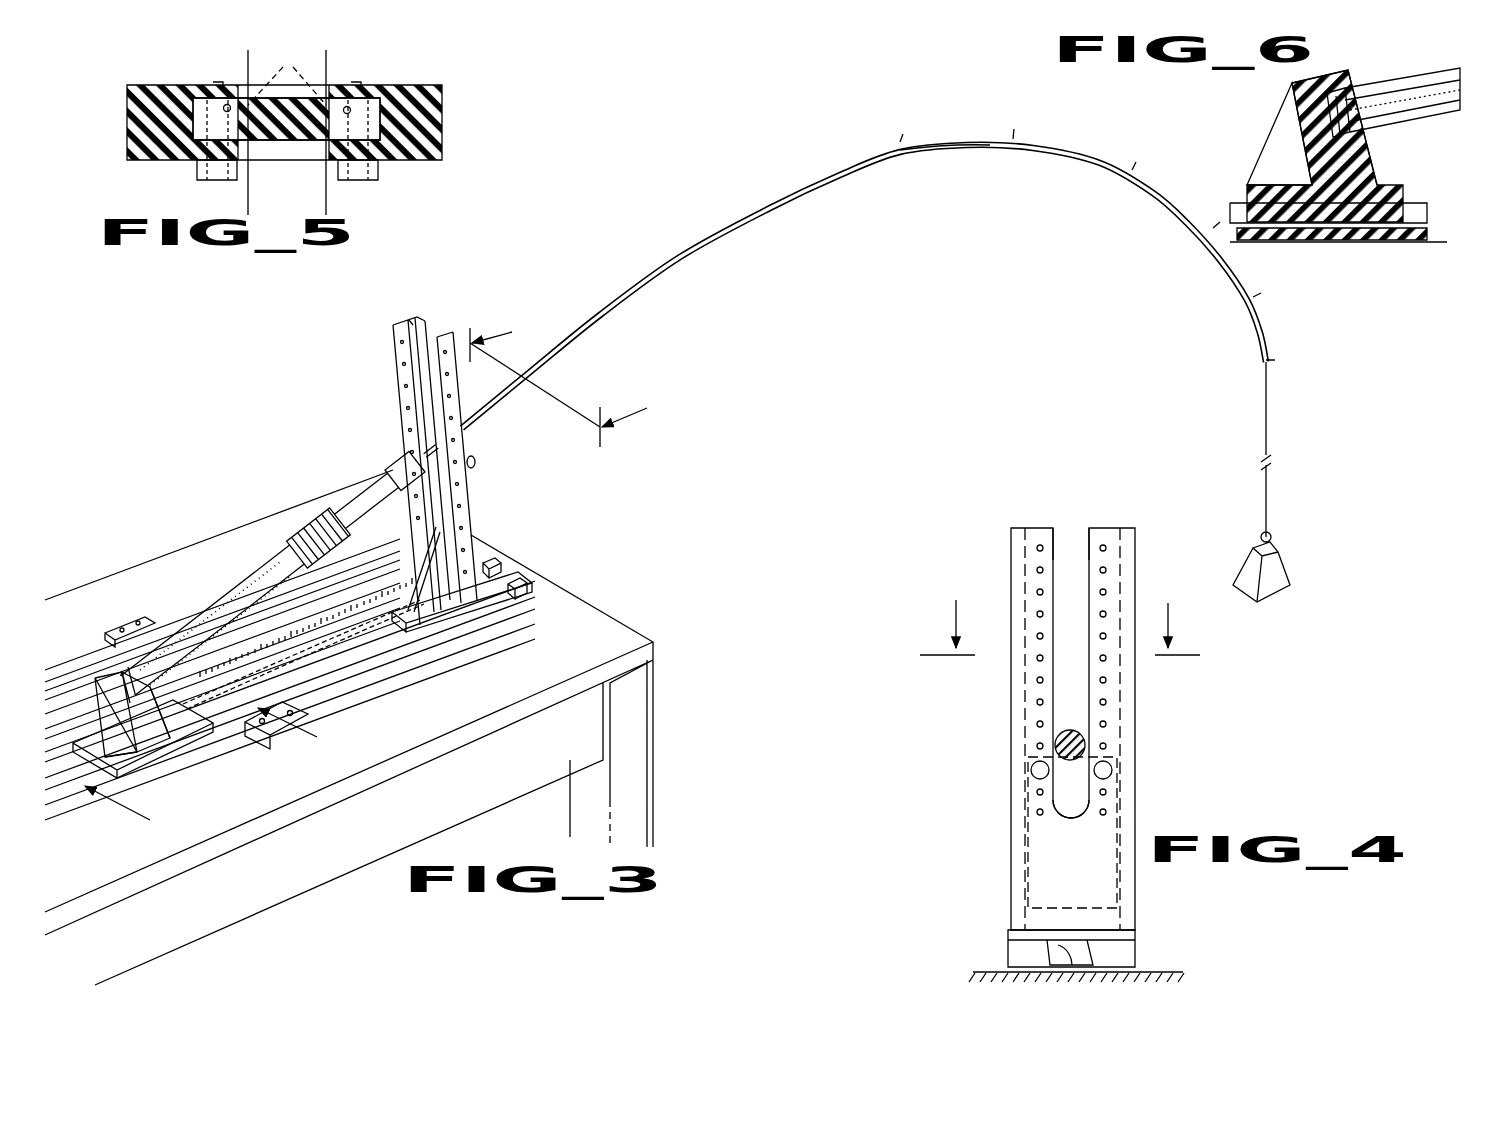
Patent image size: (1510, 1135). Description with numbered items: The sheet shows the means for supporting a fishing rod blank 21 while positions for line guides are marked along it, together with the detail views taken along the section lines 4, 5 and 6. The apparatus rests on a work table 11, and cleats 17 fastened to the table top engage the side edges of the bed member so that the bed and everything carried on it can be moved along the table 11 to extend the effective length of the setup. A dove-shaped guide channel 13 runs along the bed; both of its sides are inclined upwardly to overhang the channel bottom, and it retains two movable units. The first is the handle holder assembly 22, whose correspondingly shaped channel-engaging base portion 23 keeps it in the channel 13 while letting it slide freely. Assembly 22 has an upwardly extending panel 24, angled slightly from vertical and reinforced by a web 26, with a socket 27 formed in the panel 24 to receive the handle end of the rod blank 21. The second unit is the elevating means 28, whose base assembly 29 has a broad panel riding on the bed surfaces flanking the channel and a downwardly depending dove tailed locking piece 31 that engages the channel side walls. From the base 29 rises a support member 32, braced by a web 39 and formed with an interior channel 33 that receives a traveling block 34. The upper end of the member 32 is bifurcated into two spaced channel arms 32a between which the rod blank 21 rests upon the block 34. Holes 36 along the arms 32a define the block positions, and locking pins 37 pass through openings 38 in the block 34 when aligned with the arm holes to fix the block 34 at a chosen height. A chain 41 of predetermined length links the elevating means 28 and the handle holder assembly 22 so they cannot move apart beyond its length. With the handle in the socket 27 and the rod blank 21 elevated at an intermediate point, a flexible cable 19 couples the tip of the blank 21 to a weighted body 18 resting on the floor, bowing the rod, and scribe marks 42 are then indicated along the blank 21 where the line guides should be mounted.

In FIG. 3, the work table 11 is at (587, 638).
In FIG. 3, the guide channel 13 is at (372, 635).
In FIG. 4, the guide channel 13 is at (1075, 955).
In FIG. 3, the cleats 17 is at (141, 625).
In FIG. 3, the body 18 is at (1275, 590).
In FIG. 3, the flexible cable 19 is at (1268, 418).
In FIG. 3, the fishing rod blank 21 is at (933, 155).
In FIG. 3, the handle holder assembly 22 is at (116, 680).
In FIG. 6, the handle holder assembly 22 is at (1270, 112).
In FIG. 3, the channel-engaging base portion 23 is at (100, 768).
In FIG. 3, the panel 24 is at (160, 732).
In FIG. 6, the panel 24 is at (1290, 128).
In FIG. 3, the web 26 is at (117, 735).
In FIG. 6, the web 26 is at (1279, 134).
In FIG. 6, the socket 27 is at (1385, 120).
In FIG. 3, the elevating means 28 is at (495, 471).
In FIG. 3, the base assembly 29 is at (470, 598).
In FIG. 4, the base assembly 29 is at (1017, 932).
In FIG. 4, the dove tailed locking piece 31 is at (1080, 953).
In FIG. 3, the support member 32 is at (462, 496).
In FIG. 4, the support member 32 is at (1073, 729).
In FIG. 5, the support member 32 is at (442, 145).
In FIG. 4, the channel arms 32a is at (1037, 675).
In FIG. 4, the interior channel 33 is at (1100, 545).
In FIG. 5, the interior channel 33 is at (378, 122).
In FIG. 4, the traveling block 34 is at (1072, 790).
In FIG. 5, the traveling block 34 is at (286, 119).
In FIG. 4, the holes 36 is at (1037, 727).
In FIG. 4, the locking pins 37 is at (1035, 770).
In FIG. 5, the locking pins 37 is at (215, 82).
In FIG. 5, the openings 38 is at (287, 71).
In FIG. 3, the web 39 is at (483, 590).
In FIG. 3, the chain 41 is at (320, 651).
In FIG. 3, the scribe marks 42 is at (633, 273).
In FIG. 3, the section line 4— 4 is at (558, 372).
In FIG. 4, the section line 5— 5 is at (1059, 620).
In FIG. 3, the section line 6— 6 is at (203, 773).